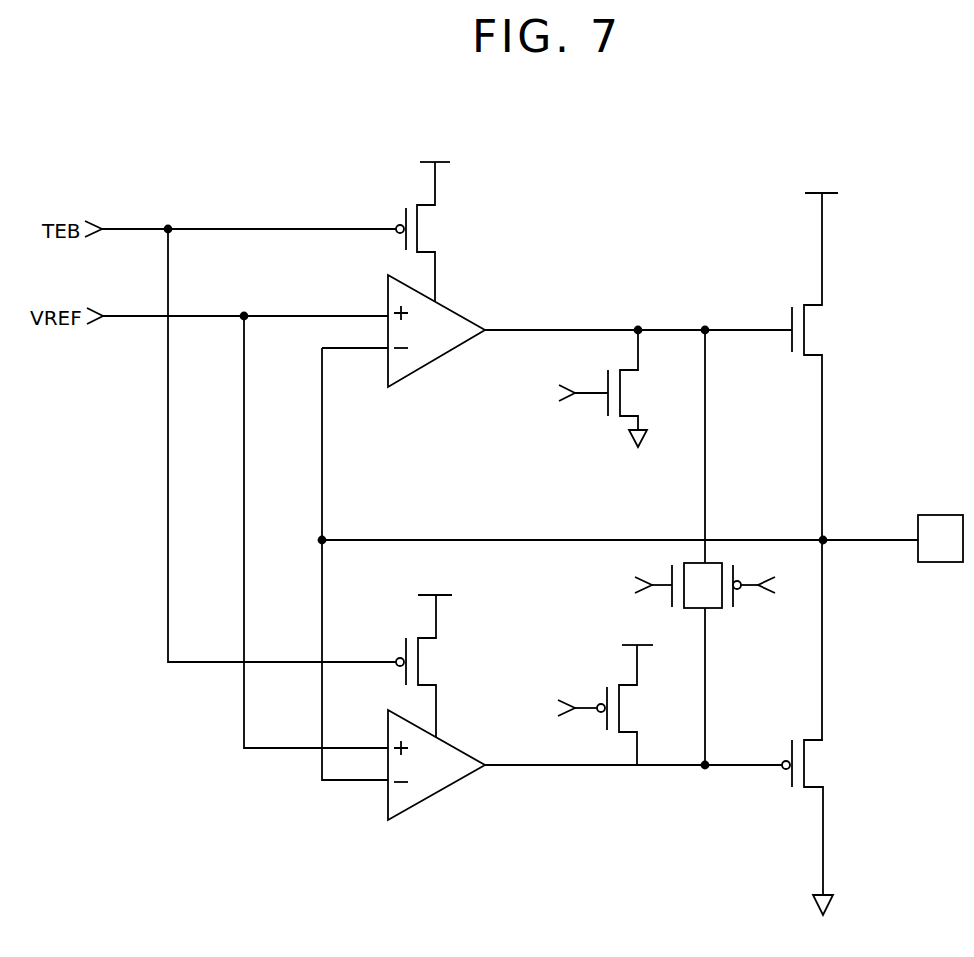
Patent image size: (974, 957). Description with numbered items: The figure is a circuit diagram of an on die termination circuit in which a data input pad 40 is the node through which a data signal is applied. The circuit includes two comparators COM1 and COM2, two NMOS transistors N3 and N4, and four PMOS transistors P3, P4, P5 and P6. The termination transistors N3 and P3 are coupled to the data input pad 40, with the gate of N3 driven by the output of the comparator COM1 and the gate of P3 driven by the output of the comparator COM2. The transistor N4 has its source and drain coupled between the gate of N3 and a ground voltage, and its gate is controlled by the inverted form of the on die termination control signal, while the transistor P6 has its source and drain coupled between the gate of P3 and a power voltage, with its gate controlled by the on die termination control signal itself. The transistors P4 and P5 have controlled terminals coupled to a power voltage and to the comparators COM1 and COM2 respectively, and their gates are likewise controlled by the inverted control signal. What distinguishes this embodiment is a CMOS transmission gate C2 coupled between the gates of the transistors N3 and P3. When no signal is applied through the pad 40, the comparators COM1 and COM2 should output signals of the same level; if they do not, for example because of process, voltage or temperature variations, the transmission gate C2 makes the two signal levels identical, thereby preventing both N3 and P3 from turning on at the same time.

The data input pad 40 is at (942, 515).
The CMOS transmission gate C2 is at (708, 608).
The PMOS transistor P3 is at (809, 827).
The PMOS transistor P4 is at (429, 218).
The PMOS transistor P5 is at (429, 654).
The PMOS transistor P6 is at (586, 705).
The NMOS transistor N3 is at (819, 453).
The NMOS transistor N4 is at (587, 388).
The comparator COM1 is at (420, 372).
The comparator COM2 is at (420, 805).